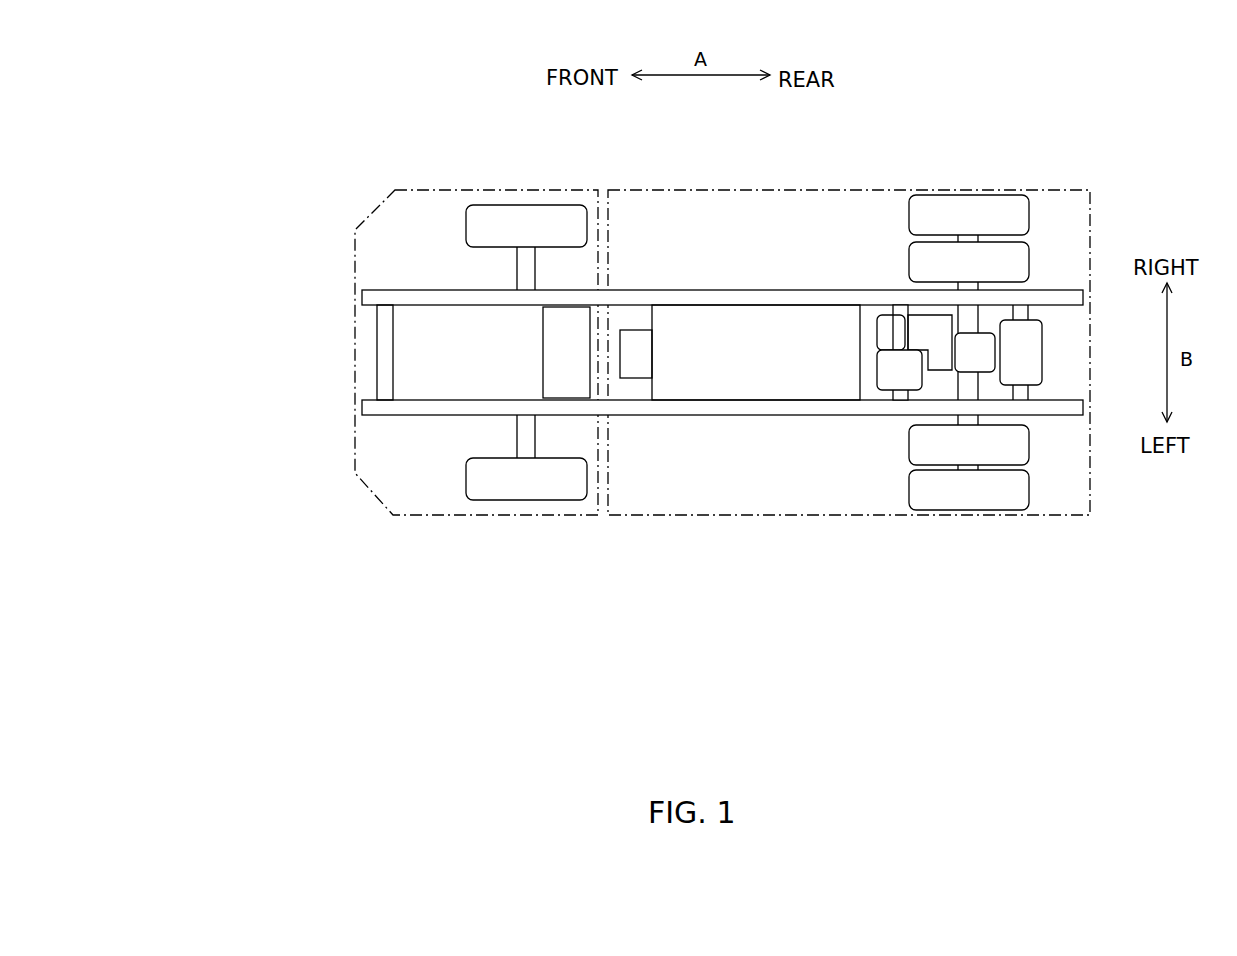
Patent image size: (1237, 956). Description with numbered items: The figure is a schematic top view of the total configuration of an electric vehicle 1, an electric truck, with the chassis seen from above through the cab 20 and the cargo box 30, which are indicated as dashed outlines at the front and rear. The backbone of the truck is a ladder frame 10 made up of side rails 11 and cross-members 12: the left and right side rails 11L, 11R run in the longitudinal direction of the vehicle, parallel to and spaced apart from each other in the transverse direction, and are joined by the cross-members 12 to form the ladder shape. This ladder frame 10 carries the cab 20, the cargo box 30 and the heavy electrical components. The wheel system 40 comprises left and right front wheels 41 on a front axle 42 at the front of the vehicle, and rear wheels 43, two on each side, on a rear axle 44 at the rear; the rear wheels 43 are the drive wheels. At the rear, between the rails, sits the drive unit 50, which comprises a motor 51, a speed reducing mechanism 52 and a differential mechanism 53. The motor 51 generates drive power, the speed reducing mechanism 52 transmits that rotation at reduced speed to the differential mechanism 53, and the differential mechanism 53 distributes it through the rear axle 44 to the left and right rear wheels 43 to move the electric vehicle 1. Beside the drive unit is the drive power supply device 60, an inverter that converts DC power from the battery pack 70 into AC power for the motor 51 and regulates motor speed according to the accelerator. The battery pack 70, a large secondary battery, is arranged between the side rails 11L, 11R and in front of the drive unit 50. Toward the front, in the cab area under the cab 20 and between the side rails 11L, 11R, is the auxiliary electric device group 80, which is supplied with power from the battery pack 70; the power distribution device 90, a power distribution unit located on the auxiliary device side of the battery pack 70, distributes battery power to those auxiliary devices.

The electric vehicle 1 is at (427, 127).
The ladder frame 10 is at (244, 293).
The side rails 11 is at (288, 273).
The right side rail 11R is at (362, 297).
The left side rail 11L is at (362, 405).
The cross-members 12 is at (383, 403).
The cab 20 is at (425, 520).
The cargo box 30 is at (636, 520).
The wheel system 40 is at (563, 560).
The front wheels 41 is at (483, 212).
The front axle 42 is at (525, 448).
The rear wheels 43 is at (995, 253).
The rear axle 44 is at (968, 420).
The drive unit 50 is at (892, 145).
The motor 51 is at (885, 365).
The speed reducing mechanism 52 is at (970, 343).
The differential mechanism 53 is at (882, 327).
The drive power supply device 60 is at (1027, 348).
The battery pack 70 is at (700, 340).
The auxiliary electric device group 80 is at (566, 325).
The power distribution device 90 is at (636, 345).